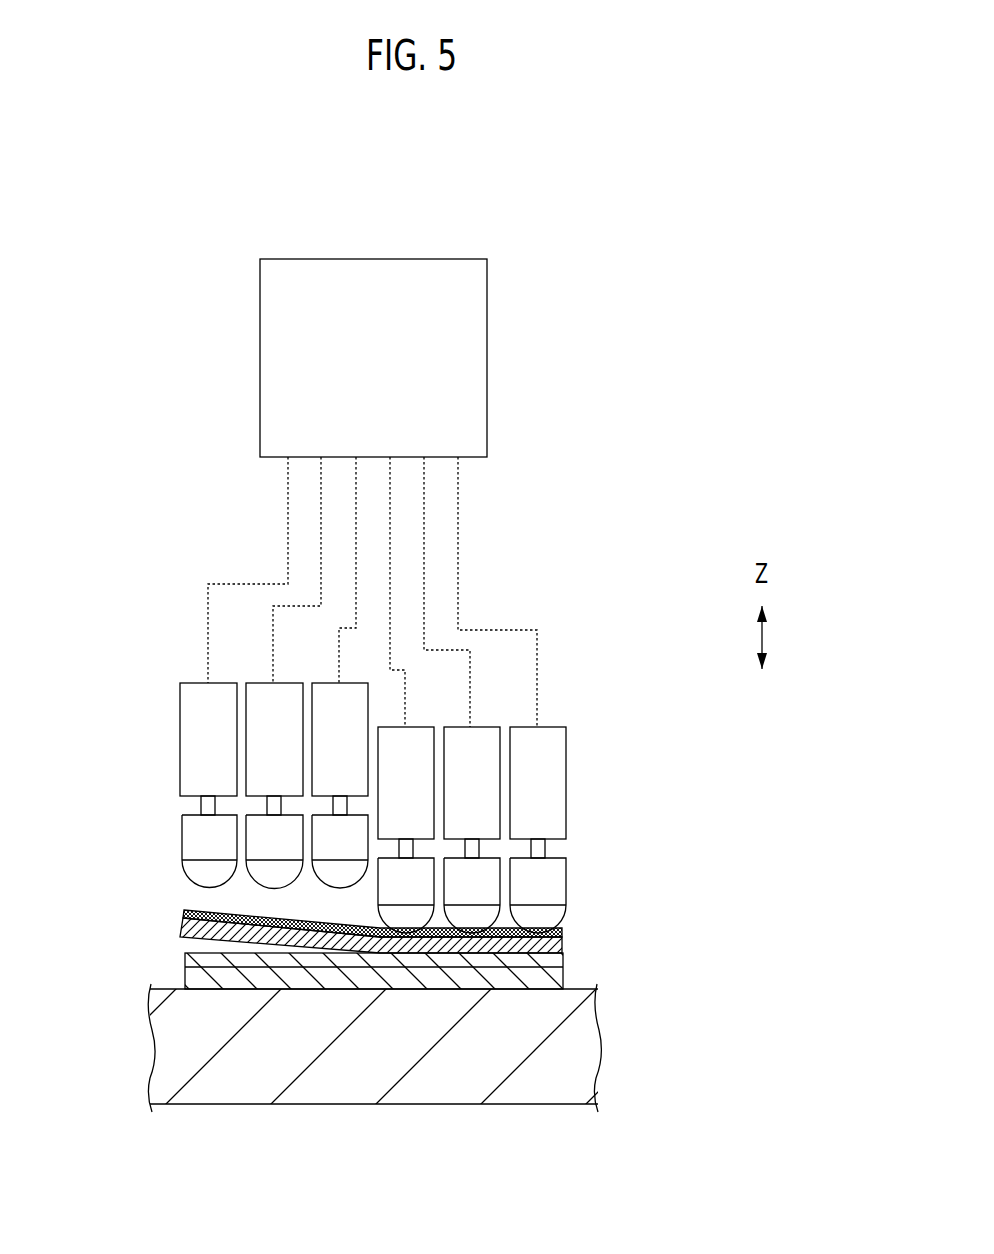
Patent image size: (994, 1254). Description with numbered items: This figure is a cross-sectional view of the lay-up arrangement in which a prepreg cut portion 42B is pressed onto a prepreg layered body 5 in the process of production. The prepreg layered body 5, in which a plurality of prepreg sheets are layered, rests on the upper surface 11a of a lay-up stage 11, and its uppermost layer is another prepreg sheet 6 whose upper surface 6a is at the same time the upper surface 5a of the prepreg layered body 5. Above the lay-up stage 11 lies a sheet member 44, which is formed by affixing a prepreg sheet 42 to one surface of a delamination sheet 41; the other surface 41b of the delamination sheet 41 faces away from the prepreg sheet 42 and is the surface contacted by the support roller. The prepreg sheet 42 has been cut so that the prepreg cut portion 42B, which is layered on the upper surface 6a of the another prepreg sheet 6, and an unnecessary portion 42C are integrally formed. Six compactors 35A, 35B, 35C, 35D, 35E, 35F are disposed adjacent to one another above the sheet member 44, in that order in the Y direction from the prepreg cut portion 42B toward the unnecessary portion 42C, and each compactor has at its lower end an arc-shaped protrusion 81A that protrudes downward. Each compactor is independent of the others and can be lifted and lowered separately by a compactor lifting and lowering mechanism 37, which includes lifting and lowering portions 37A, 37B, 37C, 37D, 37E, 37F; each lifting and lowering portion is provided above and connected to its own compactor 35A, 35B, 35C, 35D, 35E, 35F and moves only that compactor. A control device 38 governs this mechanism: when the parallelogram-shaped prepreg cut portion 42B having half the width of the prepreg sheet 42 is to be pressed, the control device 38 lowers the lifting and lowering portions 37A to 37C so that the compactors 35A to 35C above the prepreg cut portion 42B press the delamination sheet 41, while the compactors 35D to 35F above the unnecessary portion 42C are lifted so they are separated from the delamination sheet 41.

The control device 38 is at (487, 355).
The compactor lifting and lowering mechanism 37 is at (176, 720).
The lifting and lowering portion 37A is at (548, 740).
The lifting and lowering portion 37B is at (484, 740).
The lifting and lowering portion 37C is at (418, 740).
The lifting and lowering portion 37D is at (348, 695).
The lifting and lowering portion 37E is at (265, 695).
The lifting and lowering portion 37F is at (187, 703).
The compactor 35A is at (565, 875).
The compactor 35B is at (487, 855).
The compactor 35C is at (422, 855).
The compactor 35D is at (320, 808).
The compactor 35E is at (248, 810).
The compactor 35F is at (183, 841).
The protrusion 81A is at (210, 870).
The sheet member 44 is at (434, 933).
The delamination sheet 41 is at (565, 930).
The prepreg sheet 42 is at (565, 949).
The other surface of the delamination sheet 41b is at (337, 925).
The prepreg cut portion 42B is at (460, 955).
The unnecessary portion 42C is at (271, 952).
The prepreg layered body 5 is at (183, 978).
The upper surface of the prepreg layered body 5a is at (210, 1188).
The another prepreg sheet 6 is at (223, 953).
The upper surface of the another prepreg sheet 6a is at (223, 953).
The lay-up stage 11 is at (553, 1083).
The upper surface of the lay-up stage 11a is at (484, 987).